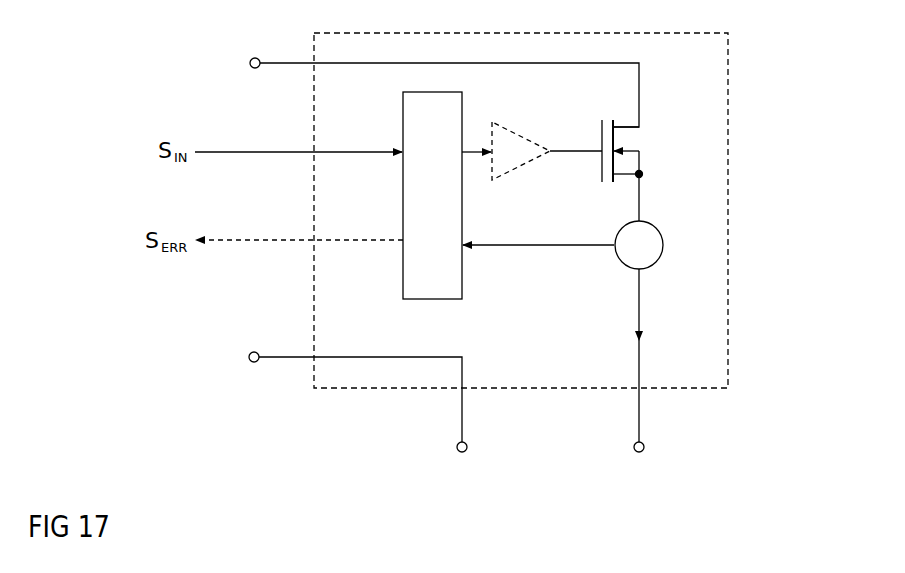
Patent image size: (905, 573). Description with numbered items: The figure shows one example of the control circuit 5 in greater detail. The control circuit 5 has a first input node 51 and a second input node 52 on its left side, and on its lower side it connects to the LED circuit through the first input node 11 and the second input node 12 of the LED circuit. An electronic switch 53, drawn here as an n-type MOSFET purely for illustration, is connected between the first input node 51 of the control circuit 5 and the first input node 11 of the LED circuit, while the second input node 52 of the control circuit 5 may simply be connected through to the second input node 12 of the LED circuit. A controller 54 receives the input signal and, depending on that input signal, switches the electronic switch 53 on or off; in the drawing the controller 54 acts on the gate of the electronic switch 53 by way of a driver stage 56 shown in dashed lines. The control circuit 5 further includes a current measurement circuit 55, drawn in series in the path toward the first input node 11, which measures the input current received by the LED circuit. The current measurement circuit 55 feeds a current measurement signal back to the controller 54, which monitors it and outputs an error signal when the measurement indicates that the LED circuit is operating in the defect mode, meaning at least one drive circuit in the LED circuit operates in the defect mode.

The control circuit 5 is at (728, 110).
The first input node 51 is at (441, 77).
The second input node 52 is at (352, 397).
The electronic switch 53 is at (641, 151).
The controller 54 is at (444, 149).
The current measurement circuit 55 is at (580, 241).
The driver 56 is at (532, 144).
The first input node of the LED circuit 11 is at (657, 316).
The second input node of the LED circuit 12 is at (445, 446).